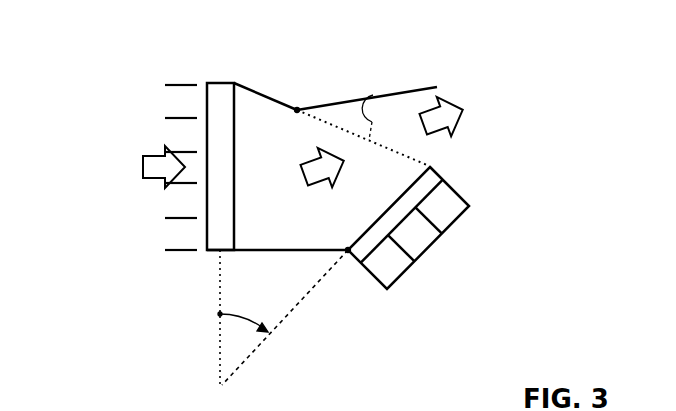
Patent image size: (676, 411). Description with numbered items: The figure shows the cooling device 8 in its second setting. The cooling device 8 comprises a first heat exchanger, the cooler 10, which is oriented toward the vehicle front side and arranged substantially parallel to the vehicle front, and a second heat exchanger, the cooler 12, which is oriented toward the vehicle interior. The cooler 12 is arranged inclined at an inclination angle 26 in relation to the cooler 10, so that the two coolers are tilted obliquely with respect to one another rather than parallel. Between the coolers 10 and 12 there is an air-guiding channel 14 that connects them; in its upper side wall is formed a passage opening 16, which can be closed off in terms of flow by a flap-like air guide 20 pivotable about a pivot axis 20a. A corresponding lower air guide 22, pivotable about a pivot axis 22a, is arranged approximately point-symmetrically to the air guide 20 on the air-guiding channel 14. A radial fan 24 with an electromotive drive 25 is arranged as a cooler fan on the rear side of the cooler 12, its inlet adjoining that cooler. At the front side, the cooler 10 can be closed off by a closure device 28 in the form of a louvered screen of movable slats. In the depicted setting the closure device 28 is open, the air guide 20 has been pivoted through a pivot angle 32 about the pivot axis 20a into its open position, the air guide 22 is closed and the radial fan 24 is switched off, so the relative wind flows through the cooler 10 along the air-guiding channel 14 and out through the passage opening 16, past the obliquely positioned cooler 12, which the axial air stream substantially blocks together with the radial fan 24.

The cooling device 8 is at (122, 117).
The cooler 10 is at (220, 83).
The cooler 12 is at (438, 175).
The air-guiding channel 14 is at (262, 97).
The passage opening 16 is at (407, 148).
The air guide 20 is at (415, 90).
The pivot axis 20a is at (297, 108).
The air guide 22 is at (268, 250).
The pivot axis 22a is at (333, 258).
The radial fan 24 is at (455, 225).
The electromotive drive 25 is at (427, 248).
The inclination angle 26 is at (232, 317).
The closure device 28 is at (181, 74).
The pivot angle 32 is at (373, 95).